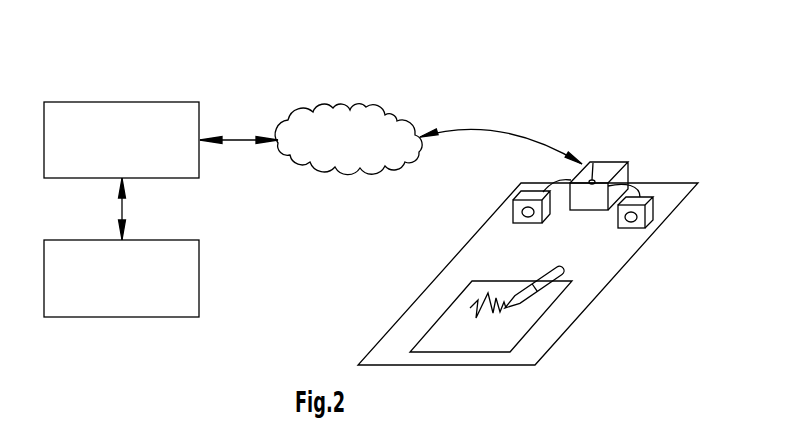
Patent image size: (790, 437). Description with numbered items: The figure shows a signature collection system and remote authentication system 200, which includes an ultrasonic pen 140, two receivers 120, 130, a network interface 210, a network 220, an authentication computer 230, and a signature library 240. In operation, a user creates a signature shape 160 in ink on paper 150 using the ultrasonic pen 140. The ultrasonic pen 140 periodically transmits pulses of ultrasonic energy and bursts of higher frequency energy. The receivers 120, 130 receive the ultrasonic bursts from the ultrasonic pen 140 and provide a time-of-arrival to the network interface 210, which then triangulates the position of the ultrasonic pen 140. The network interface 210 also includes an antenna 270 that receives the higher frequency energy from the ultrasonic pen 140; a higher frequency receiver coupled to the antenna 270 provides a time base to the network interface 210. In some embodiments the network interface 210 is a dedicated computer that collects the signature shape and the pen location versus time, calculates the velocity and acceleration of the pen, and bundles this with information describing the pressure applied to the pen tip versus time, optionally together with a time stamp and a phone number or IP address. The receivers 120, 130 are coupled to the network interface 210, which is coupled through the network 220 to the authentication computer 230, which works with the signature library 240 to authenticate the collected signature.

The signature collection and remote authentication system 200 is at (513, 82).
The receiver 120 is at (525, 191).
The receiver 130 is at (643, 197).
The ultrasonic pen 140 is at (567, 264).
The paper 150 is at (512, 278).
The signature shape 160 is at (480, 316).
The network interface 210 is at (620, 164).
The network 220 is at (399, 118).
The authentication computer 230 is at (178, 102).
The signature library 240 is at (178, 240).
The antenna 270 is at (593, 162).